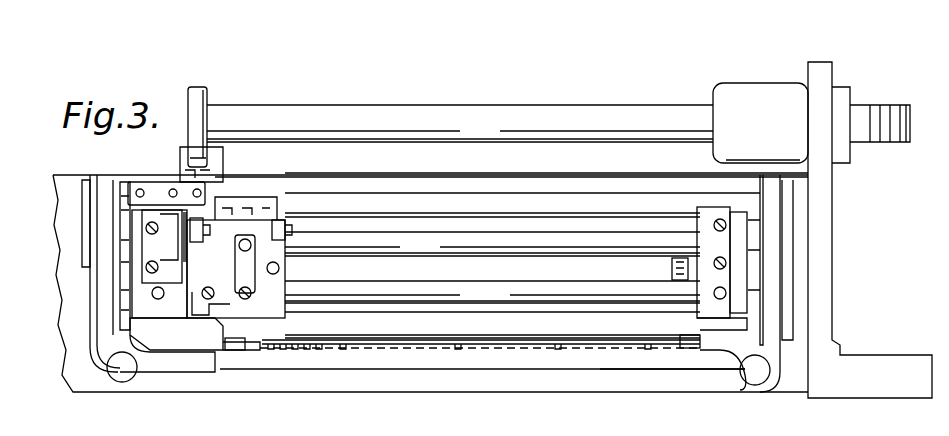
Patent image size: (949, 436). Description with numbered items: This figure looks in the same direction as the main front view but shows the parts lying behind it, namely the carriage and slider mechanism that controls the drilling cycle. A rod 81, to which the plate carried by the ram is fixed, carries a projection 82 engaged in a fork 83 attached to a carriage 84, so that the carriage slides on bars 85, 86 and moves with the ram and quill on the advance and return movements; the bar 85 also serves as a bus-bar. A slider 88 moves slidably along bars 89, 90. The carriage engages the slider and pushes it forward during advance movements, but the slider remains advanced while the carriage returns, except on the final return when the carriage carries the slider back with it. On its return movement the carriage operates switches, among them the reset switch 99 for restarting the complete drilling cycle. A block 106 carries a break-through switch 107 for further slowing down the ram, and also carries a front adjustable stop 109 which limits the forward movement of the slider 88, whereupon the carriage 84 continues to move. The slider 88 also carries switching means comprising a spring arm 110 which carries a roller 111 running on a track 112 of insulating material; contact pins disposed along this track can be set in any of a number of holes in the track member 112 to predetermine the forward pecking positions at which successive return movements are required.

The rod 81 is at (404, 110).
The projection 82 is at (207, 102).
The fork 83 is at (180, 157).
The carriage 84 is at (124, 180).
The bar 85 is at (305, 200).
The bar 86 is at (360, 318).
The slider 88 is at (283, 308).
The bar 89 is at (422, 232).
The bar 90 is at (483, 287).
The switch 99 is at (180, 245).
The block 106 is at (716, 310).
The break-through switch 107 is at (708, 215).
The front adjustable stop 109 is at (672, 269).
The spring arm 110 is at (215, 328).
The roller 111 is at (268, 350).
The track 112 is at (592, 350).